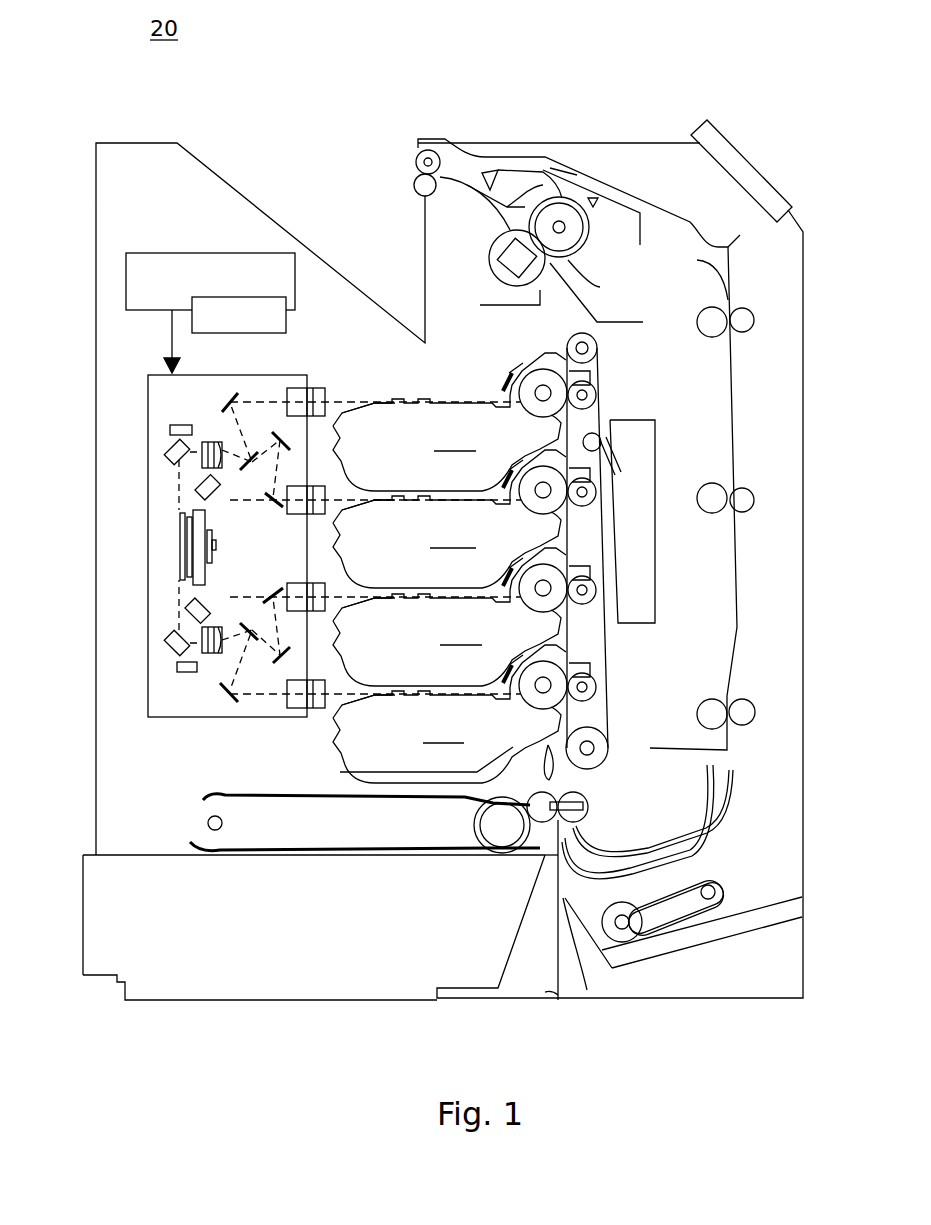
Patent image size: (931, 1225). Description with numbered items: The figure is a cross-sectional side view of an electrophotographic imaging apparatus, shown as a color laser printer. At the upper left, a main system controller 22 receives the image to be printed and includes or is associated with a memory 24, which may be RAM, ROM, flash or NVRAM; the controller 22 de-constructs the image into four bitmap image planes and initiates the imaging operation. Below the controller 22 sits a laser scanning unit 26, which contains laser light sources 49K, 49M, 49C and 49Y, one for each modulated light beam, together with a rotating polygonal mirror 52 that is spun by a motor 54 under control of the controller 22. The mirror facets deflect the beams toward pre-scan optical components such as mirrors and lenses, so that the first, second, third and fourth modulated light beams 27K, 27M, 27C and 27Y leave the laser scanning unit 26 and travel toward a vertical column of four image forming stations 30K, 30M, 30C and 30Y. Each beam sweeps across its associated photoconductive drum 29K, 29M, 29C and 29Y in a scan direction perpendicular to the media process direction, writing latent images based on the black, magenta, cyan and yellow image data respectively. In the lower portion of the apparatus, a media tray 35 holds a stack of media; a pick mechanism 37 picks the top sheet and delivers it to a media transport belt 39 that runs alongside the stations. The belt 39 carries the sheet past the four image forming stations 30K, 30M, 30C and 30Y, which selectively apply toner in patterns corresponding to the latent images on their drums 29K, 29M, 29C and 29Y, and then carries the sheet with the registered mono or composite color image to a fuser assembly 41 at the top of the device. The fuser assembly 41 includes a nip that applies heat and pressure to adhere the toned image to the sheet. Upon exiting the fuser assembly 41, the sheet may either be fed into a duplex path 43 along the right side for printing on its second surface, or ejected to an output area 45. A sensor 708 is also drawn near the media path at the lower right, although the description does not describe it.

The main system controller 22 is at (201, 253).
The memory 24 is at (283, 333).
The laser scanning unit 26 is at (148, 410).
The first modulated light beam 27K is at (343, 412).
The second modulated light beam 27M is at (343, 509).
The third modulated light beam 27C is at (343, 607).
The fourth modulated light beam 27Y is at (343, 704).
The photoconductive drum 29K is at (592, 410).
The photoconductive drum 29M is at (582, 518).
The photoconductive drum 29C is at (577, 608).
The photoconductive drum 29Y is at (575, 702).
The first image forming station 30K is at (450, 422).
The second image forming station 30M is at (450, 519).
The third image forming station 30C is at (450, 617).
The fourth image forming station 30Y is at (450, 714).
The media tray 35 is at (115, 903).
The pick mechanism 37 is at (428, 832).
The media transport belt 39 is at (609, 665).
The fuser assembly 41 is at (597, 255).
The duplex path 43 is at (731, 399).
The output area 45 is at (346, 236).
The laser light source 49K is at (182, 425).
The laser light source 49M is at (172, 490).
The laser light source 49C is at (170, 620).
The laser light source 49Y is at (180, 668).
The rotating polygonal mirror 52 is at (185, 565).
The motor 54 is at (180, 528).
The media sensor 708 is at (576, 797).